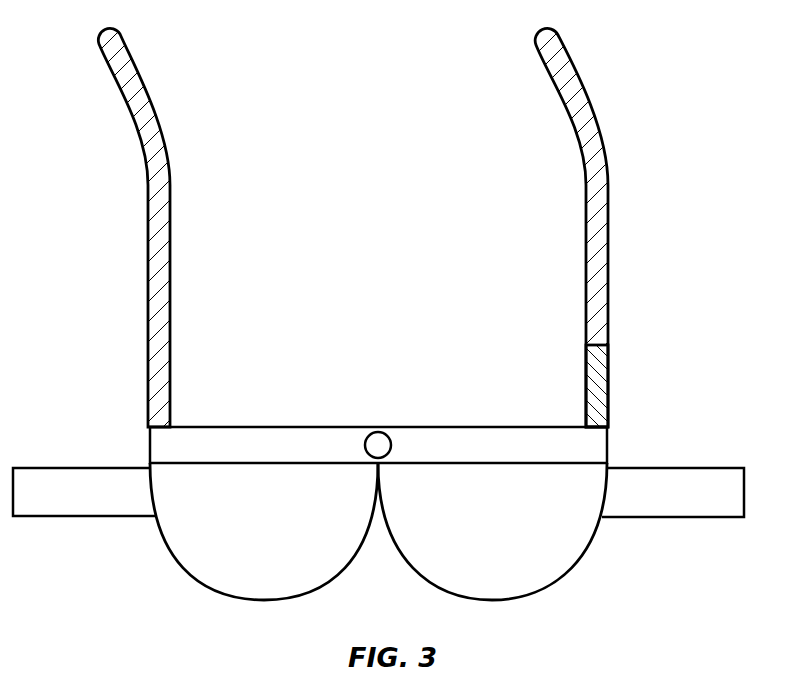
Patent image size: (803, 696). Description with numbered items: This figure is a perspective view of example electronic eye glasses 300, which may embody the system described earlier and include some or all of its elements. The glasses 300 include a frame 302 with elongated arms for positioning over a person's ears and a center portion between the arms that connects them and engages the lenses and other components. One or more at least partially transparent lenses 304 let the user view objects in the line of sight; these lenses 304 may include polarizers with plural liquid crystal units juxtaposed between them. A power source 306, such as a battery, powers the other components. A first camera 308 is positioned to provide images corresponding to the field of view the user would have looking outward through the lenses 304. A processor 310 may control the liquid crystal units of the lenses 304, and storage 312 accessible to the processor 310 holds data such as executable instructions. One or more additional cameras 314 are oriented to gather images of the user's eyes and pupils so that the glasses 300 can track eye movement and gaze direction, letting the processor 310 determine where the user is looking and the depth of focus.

The electronic eye glasses 300 is at (674, 139).
The frame 302 is at (147, 72).
The at least partially transparent lenses 304 is at (207, 585).
The power source 306 is at (608, 390).
The first camera 308 is at (378, 427).
The processor 310 is at (266, 427).
The storage 312 is at (493, 427).
The additional cameras 314 is at (82, 468).